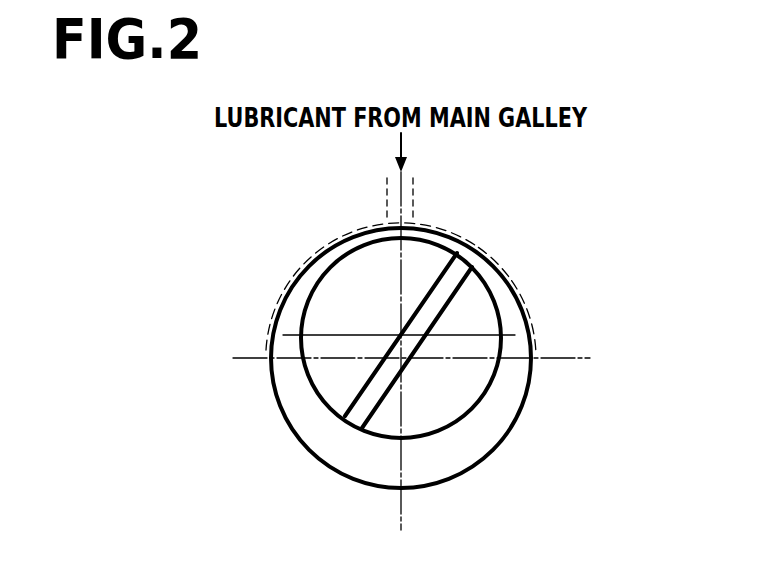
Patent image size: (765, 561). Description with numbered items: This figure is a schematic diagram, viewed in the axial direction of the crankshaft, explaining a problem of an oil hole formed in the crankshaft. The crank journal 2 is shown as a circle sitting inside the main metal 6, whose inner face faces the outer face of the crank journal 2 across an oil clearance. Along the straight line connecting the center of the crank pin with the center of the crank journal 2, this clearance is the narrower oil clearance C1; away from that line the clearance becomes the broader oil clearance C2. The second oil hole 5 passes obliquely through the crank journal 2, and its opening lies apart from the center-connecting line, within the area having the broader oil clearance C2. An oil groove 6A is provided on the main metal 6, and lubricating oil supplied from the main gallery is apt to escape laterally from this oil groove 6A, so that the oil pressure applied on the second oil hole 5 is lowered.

The crank journal 2 is at (468, 388).
The second oil hole 5 is at (377, 407).
The main metal 6 is at (512, 277).
The oil groove 6A is at (522, 298).
The oil clearance C1 is at (432, 228).
The oil clearance C2 is at (483, 252).